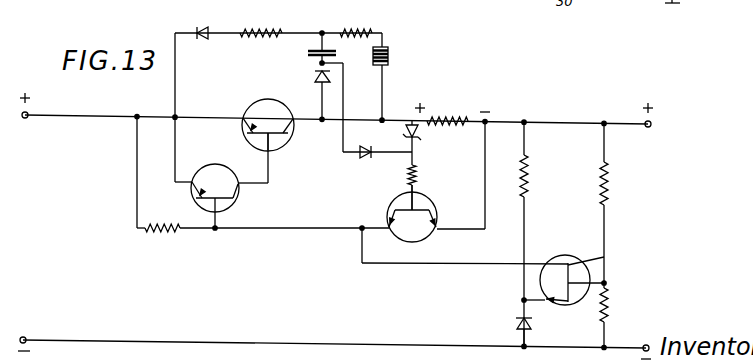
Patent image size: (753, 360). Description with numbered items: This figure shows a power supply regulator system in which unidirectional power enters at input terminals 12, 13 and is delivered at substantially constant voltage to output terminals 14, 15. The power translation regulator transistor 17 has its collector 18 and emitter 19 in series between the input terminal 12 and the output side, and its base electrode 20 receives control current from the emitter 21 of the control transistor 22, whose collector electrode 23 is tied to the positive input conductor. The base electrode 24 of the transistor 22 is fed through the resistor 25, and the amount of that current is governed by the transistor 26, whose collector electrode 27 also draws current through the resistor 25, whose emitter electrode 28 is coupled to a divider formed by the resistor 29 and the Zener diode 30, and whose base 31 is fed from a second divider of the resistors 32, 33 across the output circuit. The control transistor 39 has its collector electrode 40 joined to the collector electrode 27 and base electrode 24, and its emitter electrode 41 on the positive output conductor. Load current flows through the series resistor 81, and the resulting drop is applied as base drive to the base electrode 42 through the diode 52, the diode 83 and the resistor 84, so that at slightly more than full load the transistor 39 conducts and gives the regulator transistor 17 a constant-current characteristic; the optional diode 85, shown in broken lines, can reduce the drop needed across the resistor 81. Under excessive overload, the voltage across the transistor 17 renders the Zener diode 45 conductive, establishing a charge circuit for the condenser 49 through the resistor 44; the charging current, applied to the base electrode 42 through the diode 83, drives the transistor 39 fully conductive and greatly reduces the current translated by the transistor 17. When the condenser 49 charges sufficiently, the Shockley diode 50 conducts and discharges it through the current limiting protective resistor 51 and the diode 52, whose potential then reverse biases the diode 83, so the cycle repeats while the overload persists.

The input terminal 12 is at (25, 119).
The input terminal 13 is at (24, 337).
The output terminal 14 is at (650, 129).
The output terminal 15 is at (646, 344).
The power translation regulator transistor 17 is at (270, 99).
The collector 18 is at (243, 128).
The emitter 19 is at (294, 126).
The base electrode 20 is at (272, 136).
The emitter 21 is at (239, 195).
The control transistor 22 is at (224, 166).
The collector electrode 23 is at (195, 193).
The base electrode 24 is at (234, 206).
The resistor 25 is at (162, 232).
The transistor 26 is at (572, 256).
The collector electrode 27 is at (547, 275).
The emitter electrode 28 is at (560, 301).
The resistor 29 is at (529, 182).
The Zener diode 30 is at (531, 325).
The base 31 is at (598, 256).
The resistor 32 is at (610, 184).
The resistor 33 is at (611, 295).
The control transistor 39 is at (413, 242).
The collector electrode 40 is at (388, 219).
The emitter electrode 41 is at (440, 217).
The base electrode 42 is at (428, 202).
The resistor 44 is at (259, 29).
The Zener diode 45 is at (202, 44).
The condenser 49 is at (308, 52).
The Shockley diode 50 is at (390, 57).
The current limiting protective resistor 51 is at (357, 28).
The semiconductor diode 52 is at (330, 77).
The series resistor 81 is at (441, 118).
The semiconductor diode 83 is at (364, 158).
The resistor 84 is at (419, 172).
The semiconductor diode 85 is at (407, 130).